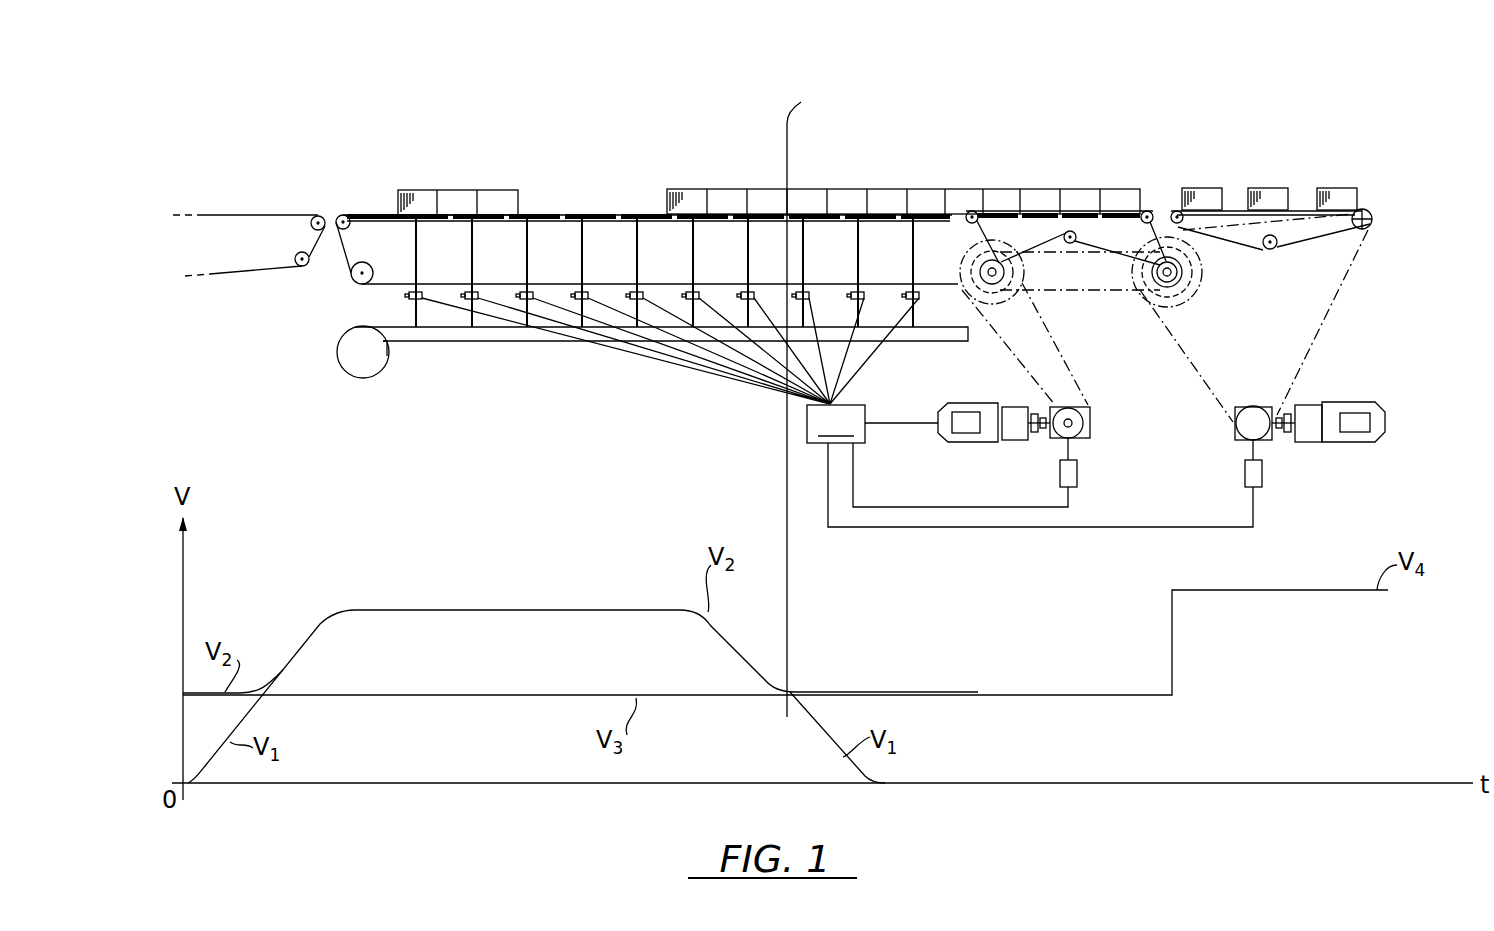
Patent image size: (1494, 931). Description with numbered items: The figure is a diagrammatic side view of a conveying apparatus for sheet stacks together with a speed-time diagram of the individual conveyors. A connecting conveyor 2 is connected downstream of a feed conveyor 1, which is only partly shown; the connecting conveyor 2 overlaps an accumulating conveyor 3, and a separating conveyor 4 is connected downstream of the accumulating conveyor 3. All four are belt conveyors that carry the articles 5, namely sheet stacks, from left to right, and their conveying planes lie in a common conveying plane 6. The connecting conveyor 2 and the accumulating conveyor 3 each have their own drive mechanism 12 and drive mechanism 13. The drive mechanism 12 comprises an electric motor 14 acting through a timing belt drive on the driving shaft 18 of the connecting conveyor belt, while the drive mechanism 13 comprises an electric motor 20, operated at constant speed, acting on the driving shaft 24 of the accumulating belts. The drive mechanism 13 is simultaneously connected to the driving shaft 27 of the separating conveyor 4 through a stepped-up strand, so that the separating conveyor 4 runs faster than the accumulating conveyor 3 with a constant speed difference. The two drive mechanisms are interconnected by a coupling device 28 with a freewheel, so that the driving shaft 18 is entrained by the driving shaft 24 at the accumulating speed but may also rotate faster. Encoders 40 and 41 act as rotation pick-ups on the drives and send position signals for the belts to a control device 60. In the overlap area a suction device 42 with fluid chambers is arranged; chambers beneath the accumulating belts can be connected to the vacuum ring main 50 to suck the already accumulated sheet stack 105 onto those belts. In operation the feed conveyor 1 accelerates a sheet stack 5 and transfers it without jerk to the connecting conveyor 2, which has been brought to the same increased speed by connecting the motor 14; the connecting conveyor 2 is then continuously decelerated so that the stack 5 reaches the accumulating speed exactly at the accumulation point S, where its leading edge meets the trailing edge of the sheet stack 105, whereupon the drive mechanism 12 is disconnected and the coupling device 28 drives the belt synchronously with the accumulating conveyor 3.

The feed conveyor 1 is at (228, 203).
The connecting conveyor 2 is at (367, 200).
The accumulating conveyor 3 is at (1153, 207).
The separating conveyor 4 is at (1373, 202).
The articles 5 is at (478, 187).
The common conveying plane 6 is at (540, 90).
The preconveyed sheet stack 105 is at (722, 190).
The accumulation point S is at (802, 401).
The drive mechanism 12 is at (1088, 447).
The drive mechanism 13 is at (1314, 452).
The electric motor 14 is at (957, 443).
The driving shaft 18 is at (1000, 267).
The electric motor 20 is at (1377, 402).
The driving shaft 24 is at (1167, 278).
The driving shaft 27 is at (1372, 222).
The coupling device 28 is at (1083, 290).
The encoder 40 is at (1060, 472).
The encoder 41 is at (1262, 478).
The suction device 42 is at (667, 355).
The vacuum ring main 50 is at (337, 345).
The control device 60 is at (1030, 466).